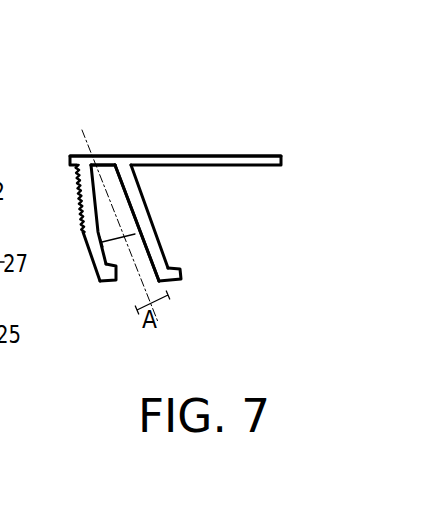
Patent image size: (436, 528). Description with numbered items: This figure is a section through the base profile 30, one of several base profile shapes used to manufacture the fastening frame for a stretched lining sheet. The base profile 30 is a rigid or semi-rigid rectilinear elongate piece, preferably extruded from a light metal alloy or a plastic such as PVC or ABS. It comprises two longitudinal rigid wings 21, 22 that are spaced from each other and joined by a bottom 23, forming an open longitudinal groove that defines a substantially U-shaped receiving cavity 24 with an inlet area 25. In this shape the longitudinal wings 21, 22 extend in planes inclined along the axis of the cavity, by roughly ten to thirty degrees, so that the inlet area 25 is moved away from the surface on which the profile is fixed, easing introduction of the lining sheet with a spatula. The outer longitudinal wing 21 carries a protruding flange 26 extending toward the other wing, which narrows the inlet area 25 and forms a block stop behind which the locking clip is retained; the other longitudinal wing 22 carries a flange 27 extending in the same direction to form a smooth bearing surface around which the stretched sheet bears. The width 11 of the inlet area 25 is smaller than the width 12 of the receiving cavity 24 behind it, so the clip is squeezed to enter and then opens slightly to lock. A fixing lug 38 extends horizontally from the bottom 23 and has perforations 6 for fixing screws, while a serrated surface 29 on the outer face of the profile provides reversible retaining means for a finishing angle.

The base profile 30 is at (184, 106).
The fixing lug 38 is at (231, 163).
The perforations 6 is at (207, 165).
The bottom 23 is at (100, 163).
The notched or serrated surface 29 is at (78, 194).
The longitudinal wing 21 is at (82, 237).
The flange 26 is at (112, 262).
The width of the receiving cavity 12 is at (117, 226).
The longitudinal wing 22 is at (138, 183).
The receiving cavity 24 is at (141, 237).
The flange 27 is at (178, 280).
The inlet area 25 is at (129, 291).
The width of the inlet area 11 is at (158, 310).